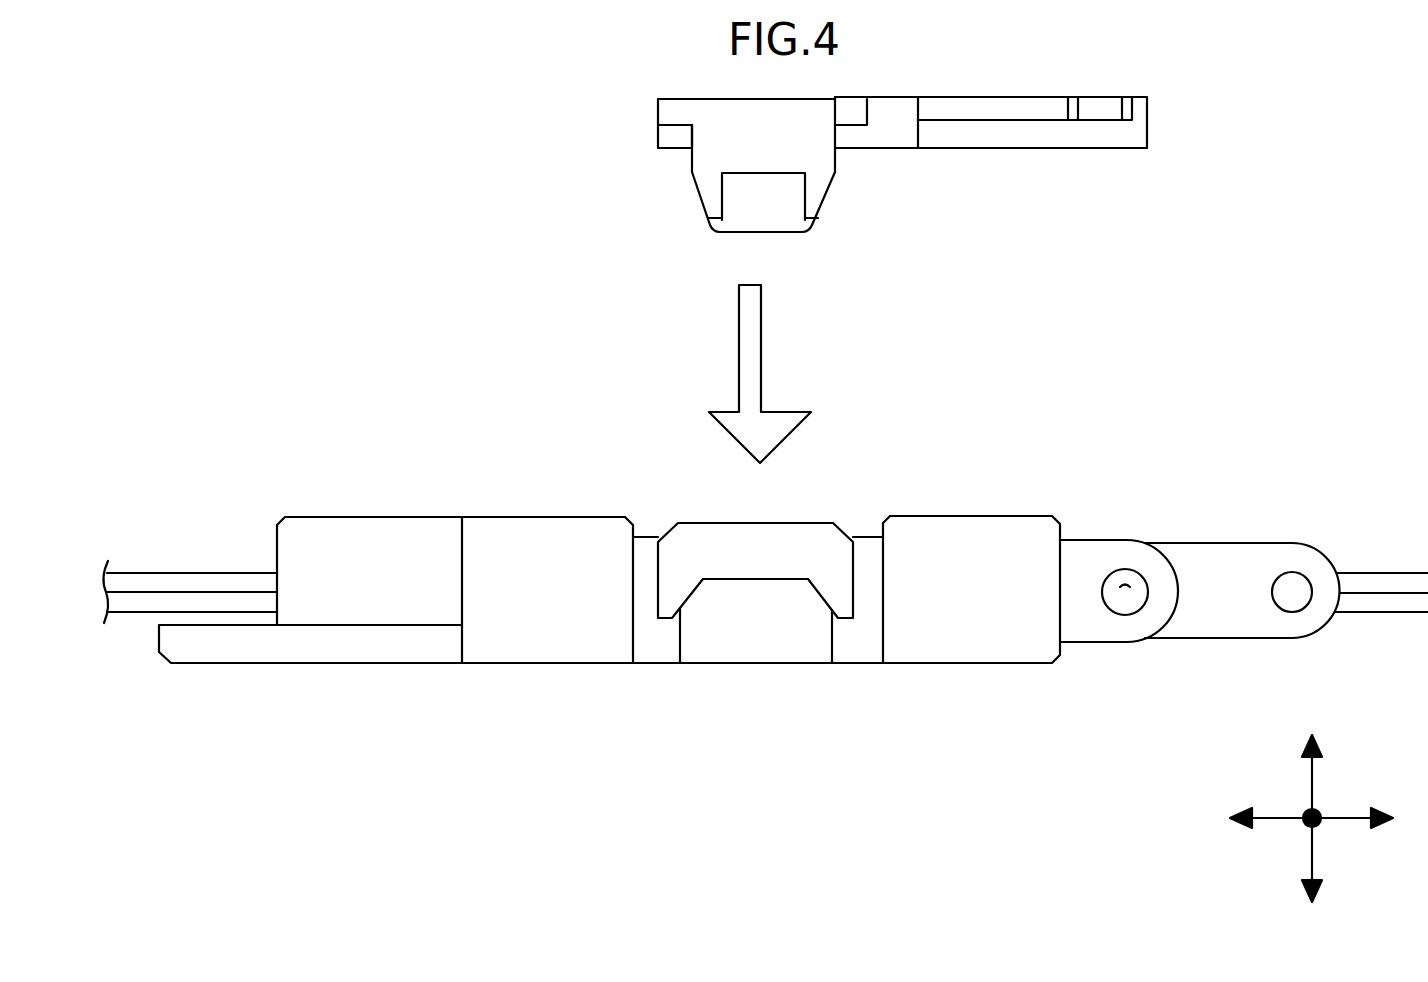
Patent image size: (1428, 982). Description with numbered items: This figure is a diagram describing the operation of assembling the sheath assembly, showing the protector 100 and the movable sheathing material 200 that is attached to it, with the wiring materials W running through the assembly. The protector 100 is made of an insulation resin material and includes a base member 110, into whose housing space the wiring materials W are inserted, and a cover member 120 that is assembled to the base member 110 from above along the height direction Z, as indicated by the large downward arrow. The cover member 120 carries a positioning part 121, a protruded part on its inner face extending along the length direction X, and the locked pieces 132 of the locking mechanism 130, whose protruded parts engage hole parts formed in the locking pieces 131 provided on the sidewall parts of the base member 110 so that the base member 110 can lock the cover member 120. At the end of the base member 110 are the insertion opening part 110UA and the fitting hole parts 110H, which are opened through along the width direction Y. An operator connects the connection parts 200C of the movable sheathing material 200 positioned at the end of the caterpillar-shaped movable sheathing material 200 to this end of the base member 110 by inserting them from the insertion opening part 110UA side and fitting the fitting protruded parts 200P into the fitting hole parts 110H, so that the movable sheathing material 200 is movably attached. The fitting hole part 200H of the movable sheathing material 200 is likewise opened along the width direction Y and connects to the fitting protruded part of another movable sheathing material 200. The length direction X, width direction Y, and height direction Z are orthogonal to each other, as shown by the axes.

The protector 100 is at (884, 133).
The cover member 120 is at (1137, 90).
The positioning part 121 is at (1098, 150).
The locking mechanism 130 is at (683, 164).
The locking piece 131 is at (763, 559).
The locked piece 132 is at (705, 184).
The base member 110 is at (700, 550).
The fitting hole part 110H is at (1126, 575).
The insertion opening part 110UA is at (1180, 585).
The movable sheathing material 200 is at (1215, 579).
The fitting protruded part 200P is at (1125, 593).
The connection part 200C is at (1125, 654).
The fitting hole part 200H is at (1287, 603).
The wiring material W is at (160, 557).
The length direction X is at (1270, 820).
The width direction Y is at (1318, 822).
The height direction Z is at (1312, 768).